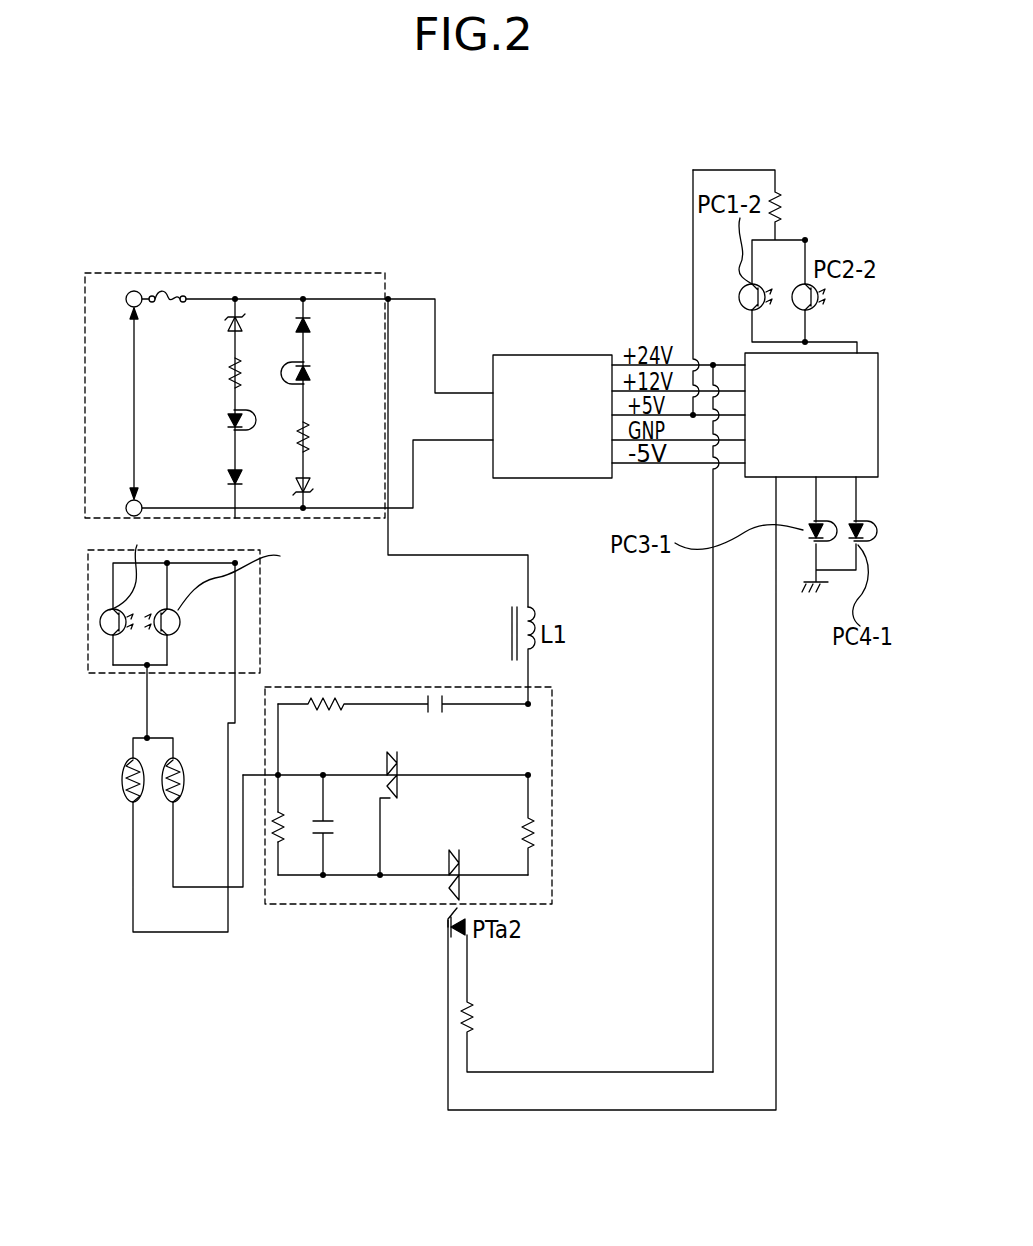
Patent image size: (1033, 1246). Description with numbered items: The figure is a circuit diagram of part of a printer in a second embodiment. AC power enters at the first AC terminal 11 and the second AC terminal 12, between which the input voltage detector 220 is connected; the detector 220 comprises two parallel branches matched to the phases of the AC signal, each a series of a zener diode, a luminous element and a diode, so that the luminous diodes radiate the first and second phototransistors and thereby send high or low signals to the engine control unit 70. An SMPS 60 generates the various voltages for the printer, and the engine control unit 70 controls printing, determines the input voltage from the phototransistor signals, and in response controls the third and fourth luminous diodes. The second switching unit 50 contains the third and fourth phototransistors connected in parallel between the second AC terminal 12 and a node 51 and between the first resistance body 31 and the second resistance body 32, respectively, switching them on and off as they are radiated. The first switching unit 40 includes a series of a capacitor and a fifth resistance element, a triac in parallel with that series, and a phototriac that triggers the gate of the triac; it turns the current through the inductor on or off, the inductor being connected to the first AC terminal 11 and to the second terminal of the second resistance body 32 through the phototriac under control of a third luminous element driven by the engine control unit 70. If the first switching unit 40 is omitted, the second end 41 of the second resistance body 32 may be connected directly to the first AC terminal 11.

The input voltage detector 220 is at (308, 272).
The first AC terminal 11 is at (203, 297).
The second AC terminal 12 is at (165, 506).
The SMPS 60 is at (552, 355).
The engine control unit 70 is at (745, 353).
The second switching unit 50 is at (260, 607).
The node 51 is at (150, 665).
The first resistance body 31 is at (127, 756).
The second resistance body 32 is at (180, 756).
The first switching unit 40 is at (552, 780).
The second end 41 is at (279, 778).